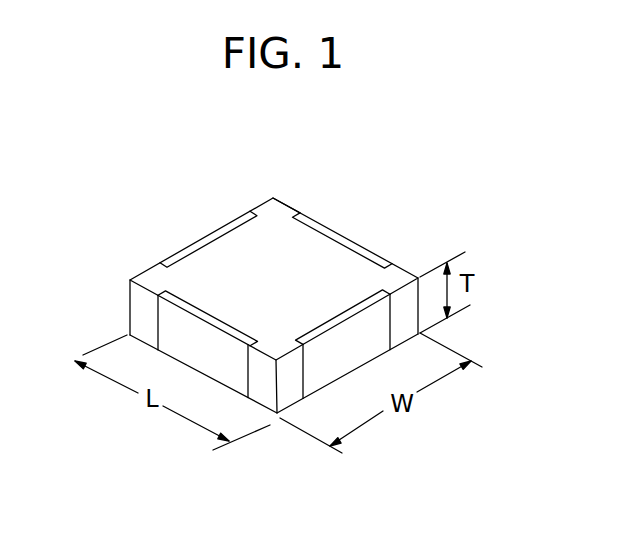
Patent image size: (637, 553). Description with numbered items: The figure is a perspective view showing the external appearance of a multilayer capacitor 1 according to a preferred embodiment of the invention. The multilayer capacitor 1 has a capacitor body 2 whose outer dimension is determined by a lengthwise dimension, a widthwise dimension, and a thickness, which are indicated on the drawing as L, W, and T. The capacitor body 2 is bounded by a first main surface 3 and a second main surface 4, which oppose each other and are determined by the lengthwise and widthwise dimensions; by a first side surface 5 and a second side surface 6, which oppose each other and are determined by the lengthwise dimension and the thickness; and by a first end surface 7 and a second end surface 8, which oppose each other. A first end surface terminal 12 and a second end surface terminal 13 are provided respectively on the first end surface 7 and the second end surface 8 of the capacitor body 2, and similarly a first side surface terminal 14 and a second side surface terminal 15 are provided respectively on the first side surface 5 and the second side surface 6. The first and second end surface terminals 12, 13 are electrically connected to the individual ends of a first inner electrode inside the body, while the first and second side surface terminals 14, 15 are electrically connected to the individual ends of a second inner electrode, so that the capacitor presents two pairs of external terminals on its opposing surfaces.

The multilayer capacitor 1 is at (226, 142).
The capacitor body 2 is at (284, 204).
The first main surface 3 is at (292, 257).
The second main surface 4 is at (259, 384).
The first side surface 5 is at (142, 312).
The second side surface 6 is at (397, 278).
The first end surface 7 is at (403, 327).
The second end surface 8 is at (155, 281).
The first end surface terminal 12 is at (323, 370).
The second end surface terminal 13 is at (207, 235).
The first side surface terminal 14 is at (212, 360).
The second side surface terminal 15 is at (357, 247).